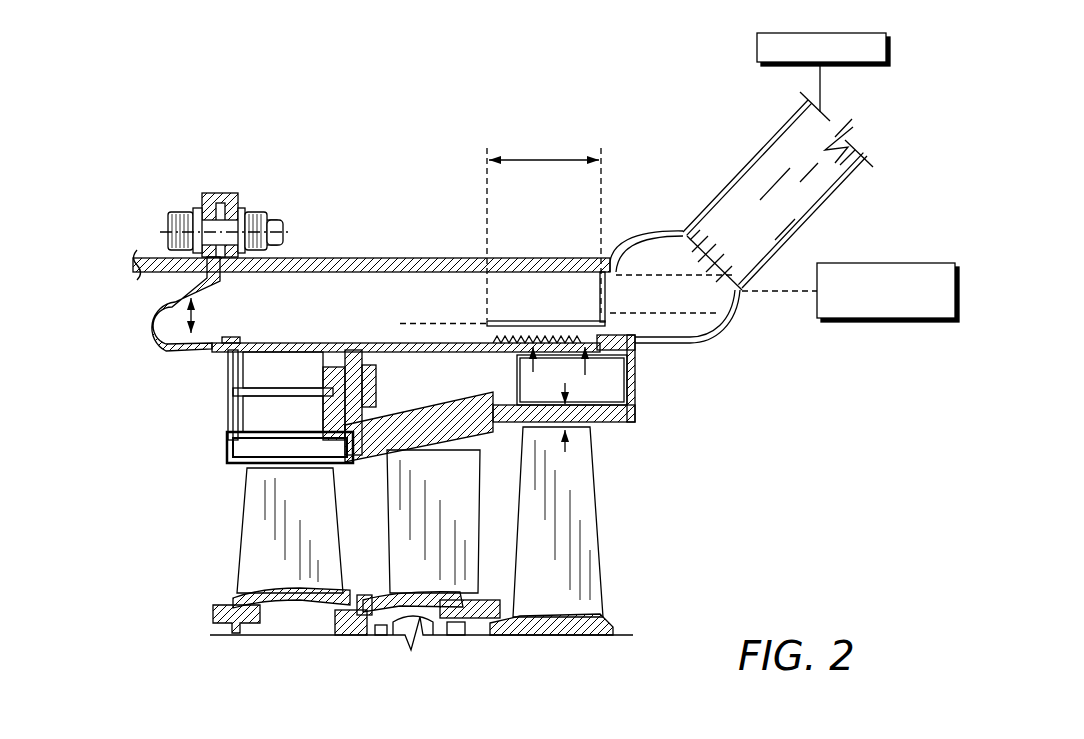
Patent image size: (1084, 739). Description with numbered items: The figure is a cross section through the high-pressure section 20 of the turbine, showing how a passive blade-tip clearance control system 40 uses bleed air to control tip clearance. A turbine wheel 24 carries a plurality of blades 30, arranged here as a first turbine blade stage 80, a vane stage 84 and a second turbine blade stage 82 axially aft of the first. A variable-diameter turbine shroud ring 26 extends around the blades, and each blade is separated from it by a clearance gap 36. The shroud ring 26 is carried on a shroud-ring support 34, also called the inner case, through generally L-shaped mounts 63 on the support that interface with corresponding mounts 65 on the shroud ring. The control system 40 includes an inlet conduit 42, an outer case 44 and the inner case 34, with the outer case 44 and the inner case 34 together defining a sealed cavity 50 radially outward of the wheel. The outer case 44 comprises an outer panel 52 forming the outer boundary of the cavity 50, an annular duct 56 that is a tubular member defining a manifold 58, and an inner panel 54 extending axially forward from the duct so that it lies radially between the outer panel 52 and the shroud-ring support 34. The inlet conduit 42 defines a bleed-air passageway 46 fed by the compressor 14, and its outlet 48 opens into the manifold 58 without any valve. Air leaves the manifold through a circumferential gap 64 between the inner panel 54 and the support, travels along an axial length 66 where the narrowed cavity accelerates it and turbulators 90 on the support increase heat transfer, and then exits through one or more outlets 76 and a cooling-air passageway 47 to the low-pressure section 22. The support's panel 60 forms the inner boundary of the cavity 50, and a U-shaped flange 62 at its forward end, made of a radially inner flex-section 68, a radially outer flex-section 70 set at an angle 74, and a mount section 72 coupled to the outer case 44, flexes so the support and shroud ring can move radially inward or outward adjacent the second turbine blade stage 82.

The compressor 14 is at (807, 33).
The high-pressure section 20 is at (578, 118).
The low-pressure section 22 is at (903, 263).
The turbine wheel 24 is at (152, 605).
The variable-diameter turbine shroud ring 26 is at (138, 418).
The blades 30 is at (218, 523).
The shroud-ring support 34 is at (118, 330).
The clearance gap 36 is at (568, 455).
The passive blade-tip clearance control system 40 is at (190, 170).
The inlet conduit 42 is at (766, 141).
The outer case 44 is at (462, 250).
The bleed-air passageway 46 is at (778, 220).
The cooling-air passageway 47 is at (740, 297).
The outlet 48 is at (707, 252).
The cavity 50 is at (342, 306).
The outer panel 52 is at (465, 257).
The inner panel 54 is at (482, 317).
The annular duct 56 is at (652, 229).
The manifold 58 is at (698, 320).
The panel 60 is at (330, 337).
The flange 62 is at (147, 350).
The mounts 63 is at (478, 358).
The gap 64 is at (583, 318).
The mounts 65 is at (317, 413).
The axial length 66 is at (544, 219).
The radially inner flex-section 68 is at (188, 330).
The radially outer flex-section 70 is at (160, 292).
The mount section 72 is at (207, 253).
The angle 74 is at (197, 315).
The outlets 76 is at (653, 313).
The first turbine blade stage 80 is at (285, 556).
The second turbine blade stage 82 is at (580, 552).
The vane stage 84 is at (442, 553).
The turbulators 90 is at (528, 358).